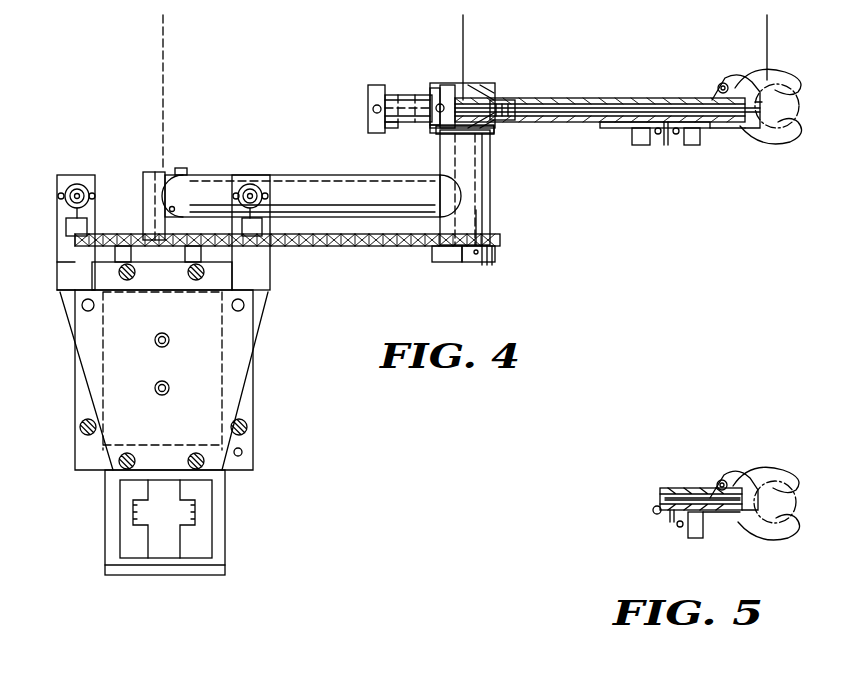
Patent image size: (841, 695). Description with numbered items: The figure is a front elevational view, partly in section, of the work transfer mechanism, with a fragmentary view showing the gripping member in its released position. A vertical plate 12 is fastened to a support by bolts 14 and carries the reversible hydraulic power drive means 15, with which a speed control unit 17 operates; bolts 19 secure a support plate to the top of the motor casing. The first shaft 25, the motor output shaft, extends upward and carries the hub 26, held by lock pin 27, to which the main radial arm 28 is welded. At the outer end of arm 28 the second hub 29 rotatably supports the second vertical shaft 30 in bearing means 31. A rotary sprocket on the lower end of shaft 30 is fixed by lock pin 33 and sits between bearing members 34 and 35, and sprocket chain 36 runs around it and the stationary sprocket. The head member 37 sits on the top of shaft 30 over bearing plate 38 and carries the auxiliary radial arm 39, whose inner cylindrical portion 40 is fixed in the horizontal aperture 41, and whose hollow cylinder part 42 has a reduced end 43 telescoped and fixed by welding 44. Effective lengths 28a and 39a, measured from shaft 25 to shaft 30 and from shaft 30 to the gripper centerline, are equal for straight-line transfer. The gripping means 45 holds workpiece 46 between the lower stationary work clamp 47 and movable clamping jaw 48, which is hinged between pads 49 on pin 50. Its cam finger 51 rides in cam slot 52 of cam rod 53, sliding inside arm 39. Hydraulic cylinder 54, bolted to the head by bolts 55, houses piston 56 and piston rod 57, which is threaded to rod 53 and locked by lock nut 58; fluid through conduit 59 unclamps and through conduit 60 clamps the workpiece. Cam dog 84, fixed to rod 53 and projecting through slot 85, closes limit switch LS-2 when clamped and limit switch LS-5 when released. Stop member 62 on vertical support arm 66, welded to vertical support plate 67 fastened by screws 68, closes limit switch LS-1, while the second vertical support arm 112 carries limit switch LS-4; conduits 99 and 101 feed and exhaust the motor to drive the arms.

In FIG. 4, the vertical plate 12 is at (75, 383).
In FIG. 4, the bolts 14 is at (82, 423).
In FIG. 4, the reversible power drive means 15 is at (100, 345).
In FIG. 4, the speed control unit 17 is at (164, 552).
In FIG. 4, the bolts 19 is at (123, 234).
In FIG. 4, the first shaft 25 is at (172, 175).
In FIG. 4, the vertical sleeve or hub 26 is at (155, 172).
In FIG. 4, the lock pin 27 is at (170, 209).
In FIG. 4, the main radial arm 28 is at (195, 180).
In FIG. 4, the effective length of main arm 28a is at (463, 24).
In FIG. 4, the second vertical sleeve or hub 29 is at (485, 195).
In FIG. 4, the second vertical shaft 30 is at (470, 168).
In FIG. 4, the bearing means 31 is at (480, 220).
In FIG. 4, the lock pin 33 is at (476, 255).
In FIG. 4, the bearing member 34 is at (492, 236).
In FIG. 4, the bearing member 35 is at (437, 260).
In FIG. 4, the sprocket chain 36 is at (330, 247).
In FIG. 4, the head member 37 is at (488, 88).
In FIG. 4, the bearing plate 38 is at (492, 140).
In FIG. 4, the auxiliary radial arm 39 is at (565, 97).
In FIG. 4, the effective length of auxiliary arm 39a is at (468, 24).
In FIG. 4, the inner cylindrical portion 40 is at (535, 97).
In FIG. 4, the horizontal aperture 41 is at (465, 88).
In FIG. 4, the hollow cylinder part 42 is at (645, 97).
In FIG. 4, the reduced end 43 is at (594, 97).
In FIG. 4, the welding 44 is at (618, 97).
In FIG. 4, the gripping means 45 is at (750, 76).
In FIG. 5, the gripping means 45 is at (745, 472).
In FIG. 4, the workpiece 46 is at (800, 106).
In FIG. 5, the workpiece 46 is at (798, 502).
In FIG. 4, the lower stationary work clamp 47 is at (782, 138).
In FIG. 5, the lower stationary work clamp 47 is at (774, 545).
In FIG. 4, the movable clamping jaw 48 is at (782, 83).
In FIG. 5, the movable clamping jaw 48 is at (776, 470).
In FIG. 4, the vertical spaced apart pads 49 is at (712, 95).
In FIG. 5, the vertical spaced apart pads 49 is at (710, 487).
In FIG. 4, the pin 50 is at (723, 83).
In FIG. 5, the pin 50 is at (722, 480).
In FIG. 4, the cam finger 51 is at (758, 104).
In FIG. 5, the cam finger 51 is at (752, 497).
In FIG. 4, the cam slot 52 is at (725, 130).
In FIG. 5, the cam slot 52 is at (736, 512).
In FIG. 4, the cam rod 53 is at (608, 123).
In FIG. 5, the cam rod 53 is at (680, 500).
In FIG. 4, the hydraulic cylinder 54 is at (390, 94).
In FIG. 4, the bolts 55 is at (437, 84).
In FIG. 4, the piston 56 is at (392, 128).
In FIG. 4, the piston rod 57 is at (410, 94).
In FIG. 4, the lock nut 58 is at (505, 99).
In FIG. 4, the conduit 59 is at (370, 108).
In FIG. 4, the conduit 60 is at (430, 126).
In FIG. 4, the stop member 62 is at (250, 184).
In FIG. 4, the vertical support arm 66 is at (260, 275).
In FIG. 4, the vertical support plate 67 is at (250, 348).
In FIG. 4, the screws 68 is at (135, 272).
In FIG. 4, the cam dog 84 is at (665, 134).
In FIG. 5, the cam dog 84 is at (677, 526).
In FIG. 4, the slot 85 is at (668, 122).
In FIG. 5, the slot 85 is at (660, 512).
In FIG. 4, the conduit 99 is at (155, 337).
In FIG. 4, the conduit 101 is at (155, 387).
In FIG. 4, the vertical support arm 112 is at (62, 252).
In FIG. 4, the limit switch LS-1 is at (262, 228).
In FIG. 4, the limit switch LS-2 is at (636, 145).
In FIG. 4, the limit switch LS-4 is at (66, 232).
In FIG. 4, the limit switch LS-5 is at (693, 145).
In FIG. 5, the limit switch LS-5 is at (692, 538).